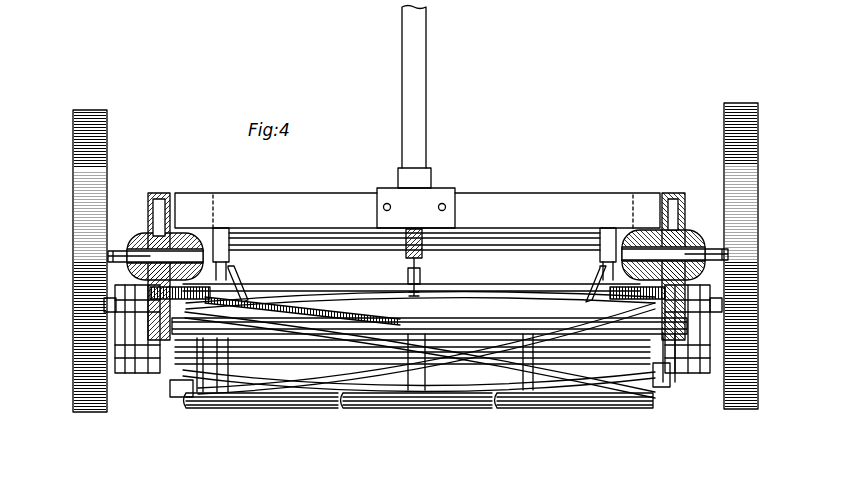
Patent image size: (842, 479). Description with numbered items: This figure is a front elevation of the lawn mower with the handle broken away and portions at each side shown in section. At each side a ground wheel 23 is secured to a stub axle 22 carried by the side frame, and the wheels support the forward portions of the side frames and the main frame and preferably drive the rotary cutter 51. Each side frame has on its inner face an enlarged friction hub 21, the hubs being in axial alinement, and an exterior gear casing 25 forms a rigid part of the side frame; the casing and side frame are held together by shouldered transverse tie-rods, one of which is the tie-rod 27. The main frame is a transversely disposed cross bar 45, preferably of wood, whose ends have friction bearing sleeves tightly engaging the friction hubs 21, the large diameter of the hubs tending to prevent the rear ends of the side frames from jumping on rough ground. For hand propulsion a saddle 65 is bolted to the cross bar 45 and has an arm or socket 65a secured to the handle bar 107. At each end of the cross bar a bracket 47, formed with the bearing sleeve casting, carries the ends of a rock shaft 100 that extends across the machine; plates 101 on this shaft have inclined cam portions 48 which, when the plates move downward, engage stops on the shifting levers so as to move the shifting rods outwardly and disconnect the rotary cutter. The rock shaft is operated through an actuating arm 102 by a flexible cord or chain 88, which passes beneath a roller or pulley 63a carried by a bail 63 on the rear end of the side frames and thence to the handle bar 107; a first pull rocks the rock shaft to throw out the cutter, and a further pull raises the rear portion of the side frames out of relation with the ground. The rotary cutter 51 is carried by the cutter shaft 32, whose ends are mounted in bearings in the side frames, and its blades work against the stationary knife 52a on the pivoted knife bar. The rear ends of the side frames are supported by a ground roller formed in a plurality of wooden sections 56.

The ground wheel 23 is at (84, 216).
The handle bar 107 is at (413, 107).
The arm or socket 65a is at (408, 183).
The saddle 65 is at (428, 200).
The cross bar 45 is at (518, 198).
The friction hub 21 is at (188, 237).
The stub axle 22 is at (113, 258).
The bracket 47 is at (216, 232).
The rock shaft 100 is at (332, 244).
The actuating arm 102 is at (423, 254).
The flexible cord or chain 88 is at (409, 259).
The roller or pulley 63a is at (422, 268).
The bail 63 is at (345, 292).
The plate 101 is at (230, 290).
The inclined cam portion 48 is at (270, 292).
The rotary cutter 51 is at (500, 298).
The transverse tie-rod 27 is at (262, 362).
The cutter shaft 32 is at (384, 347).
The stationary knife 52a is at (183, 396).
The roller section 56 is at (224, 410).
The gear casing 25 is at (147, 364).